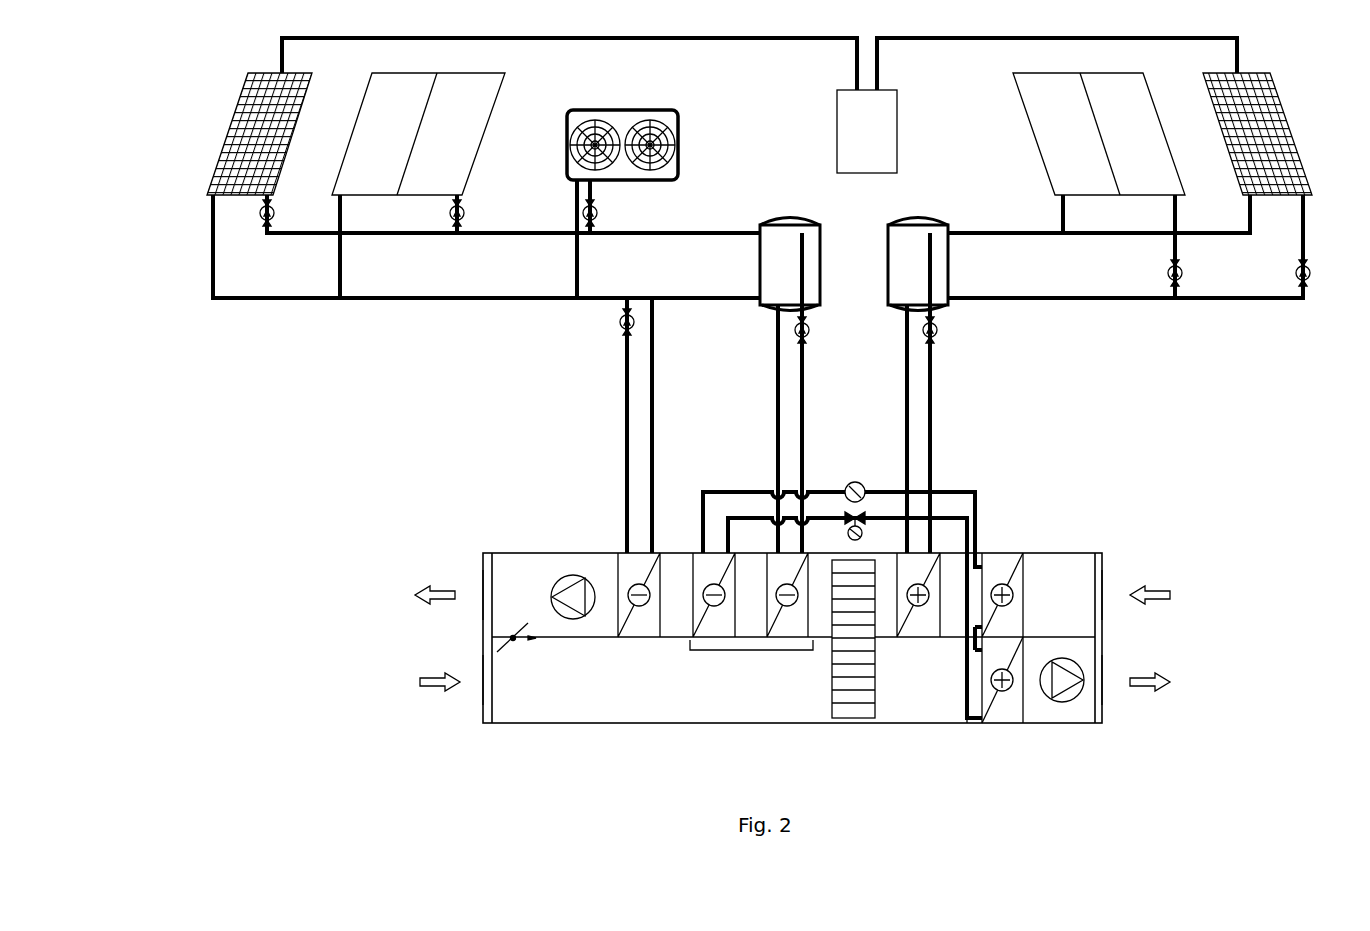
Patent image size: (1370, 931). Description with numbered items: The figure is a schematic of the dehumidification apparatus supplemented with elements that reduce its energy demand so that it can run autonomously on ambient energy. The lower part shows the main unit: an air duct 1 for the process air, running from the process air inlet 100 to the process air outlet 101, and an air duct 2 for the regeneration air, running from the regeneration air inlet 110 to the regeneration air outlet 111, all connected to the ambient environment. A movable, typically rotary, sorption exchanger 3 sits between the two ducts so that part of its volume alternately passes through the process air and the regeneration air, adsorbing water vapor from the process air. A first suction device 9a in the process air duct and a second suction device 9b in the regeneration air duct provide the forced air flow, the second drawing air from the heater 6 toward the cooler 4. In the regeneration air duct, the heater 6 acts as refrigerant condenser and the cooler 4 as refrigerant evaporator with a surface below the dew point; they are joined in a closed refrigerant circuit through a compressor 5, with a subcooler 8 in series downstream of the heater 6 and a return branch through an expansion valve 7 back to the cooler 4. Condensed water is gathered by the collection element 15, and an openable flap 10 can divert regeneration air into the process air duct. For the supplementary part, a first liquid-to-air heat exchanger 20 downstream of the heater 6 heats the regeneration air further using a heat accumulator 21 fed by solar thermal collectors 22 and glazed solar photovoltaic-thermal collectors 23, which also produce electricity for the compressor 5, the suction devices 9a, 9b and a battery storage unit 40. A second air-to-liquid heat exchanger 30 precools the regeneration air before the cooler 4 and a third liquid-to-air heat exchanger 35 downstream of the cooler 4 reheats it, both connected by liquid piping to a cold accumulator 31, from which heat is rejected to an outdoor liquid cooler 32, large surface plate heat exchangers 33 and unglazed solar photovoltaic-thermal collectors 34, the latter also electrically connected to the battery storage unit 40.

The air duct for the process air 1 is at (622, 723).
The air duct for the regeneration air 2 is at (1043, 553).
The sorption exchanger 3 is at (850, 718).
The cooler 4 is at (715, 550).
The compressor 5 is at (858, 484).
The heater 6 is at (1000, 553).
The expansion valve 7 is at (862, 516).
The subcooler 8 is at (1000, 723).
The first suction device 9a is at (1065, 700).
The second suction device 9b is at (560, 582).
The openable flap 10 is at (512, 640).
The element for the collection of water 15 is at (705, 650).
The first liquid-to-air heat exchanger 20 is at (898, 636).
The heat accumulator 21 is at (950, 307).
The solar thermal collectors 22 is at (1033, 133).
The glazed solar photovoltaic-thermal collectors 23 is at (1287, 133).
The second air-to-liquid heat exchanger 30 is at (778, 640).
The cold accumulator 31 is at (758, 308).
The outdoor liquid cooler 32 is at (626, 110).
The large surface plate heat exchangers 33 is at (487, 128).
The unglazed solar photovoltaic-thermal collectors 34 is at (230, 133).
The third liquid-to-air heat exchanger 35 is at (618, 552).
The battery storage unit 40 is at (838, 133).
The process air inlet 100 is at (483, 680).
The process air outlet 101 is at (1102, 682).
The regeneration air inlet 110 is at (1102, 595).
The regeneration air outlet 111 is at (483, 590).